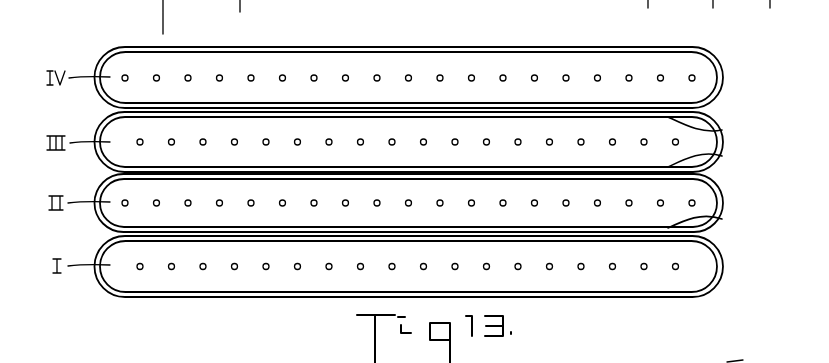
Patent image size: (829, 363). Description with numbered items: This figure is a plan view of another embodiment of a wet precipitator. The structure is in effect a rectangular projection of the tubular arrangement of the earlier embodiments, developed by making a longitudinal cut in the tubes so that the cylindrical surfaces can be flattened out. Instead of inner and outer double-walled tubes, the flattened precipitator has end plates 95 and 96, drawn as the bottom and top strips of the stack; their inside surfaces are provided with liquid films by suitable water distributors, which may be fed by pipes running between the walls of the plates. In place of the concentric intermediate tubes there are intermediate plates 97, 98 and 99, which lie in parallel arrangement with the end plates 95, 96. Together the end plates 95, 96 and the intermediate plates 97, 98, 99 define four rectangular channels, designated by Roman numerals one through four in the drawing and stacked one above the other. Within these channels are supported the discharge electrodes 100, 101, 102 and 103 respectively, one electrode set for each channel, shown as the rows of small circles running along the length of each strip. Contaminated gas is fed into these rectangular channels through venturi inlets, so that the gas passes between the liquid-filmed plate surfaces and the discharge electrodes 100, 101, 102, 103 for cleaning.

The end plate 95 is at (577, 292).
The end plate 96 is at (497, 41).
The intermediate plate 97 is at (722, 219).
The intermediate plate 98 is at (722, 156).
The intermediate plate 99 is at (722, 130).
The discharge electrode 100 is at (234, 270).
The discharge electrode 101 is at (154, 205).
The discharge electrode 102 is at (169, 144).
The discharge electrode 103 is at (220, 75).